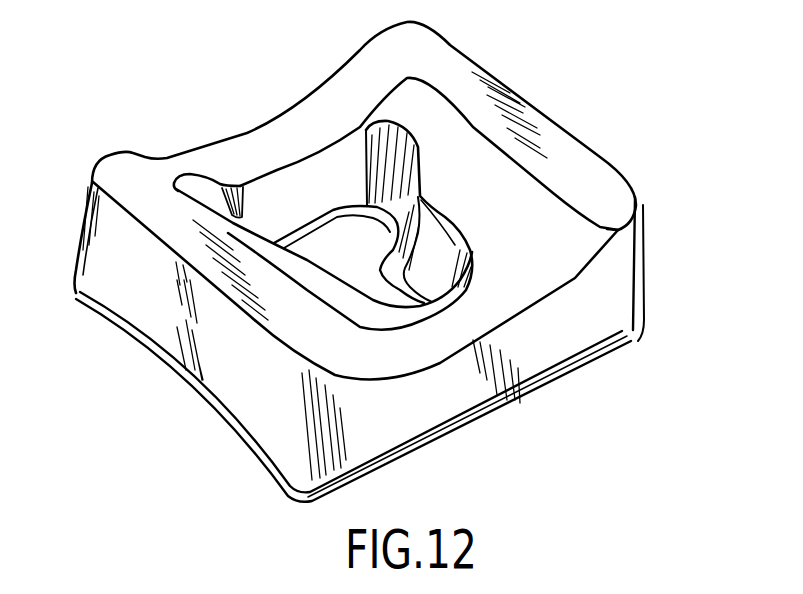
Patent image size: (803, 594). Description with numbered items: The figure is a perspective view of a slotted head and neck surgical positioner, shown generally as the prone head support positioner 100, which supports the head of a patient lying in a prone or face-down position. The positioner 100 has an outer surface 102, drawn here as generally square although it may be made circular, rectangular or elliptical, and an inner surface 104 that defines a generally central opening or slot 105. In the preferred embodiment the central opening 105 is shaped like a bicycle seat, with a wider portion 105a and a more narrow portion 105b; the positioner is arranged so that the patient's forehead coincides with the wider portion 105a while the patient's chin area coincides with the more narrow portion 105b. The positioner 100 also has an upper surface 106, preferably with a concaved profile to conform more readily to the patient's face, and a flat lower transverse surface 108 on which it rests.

The prone head support positioner 100 is at (588, 112).
The outer surface 102 is at (626, 286).
The inner surface 104 is at (272, 193).
The central opening 105 is at (344, 243).
The wider portion 105a is at (372, 228).
The more narrow portion 105b is at (399, 295).
The upper surface 106 is at (566, 255).
The flat lower transverse surface 108 is at (543, 387).